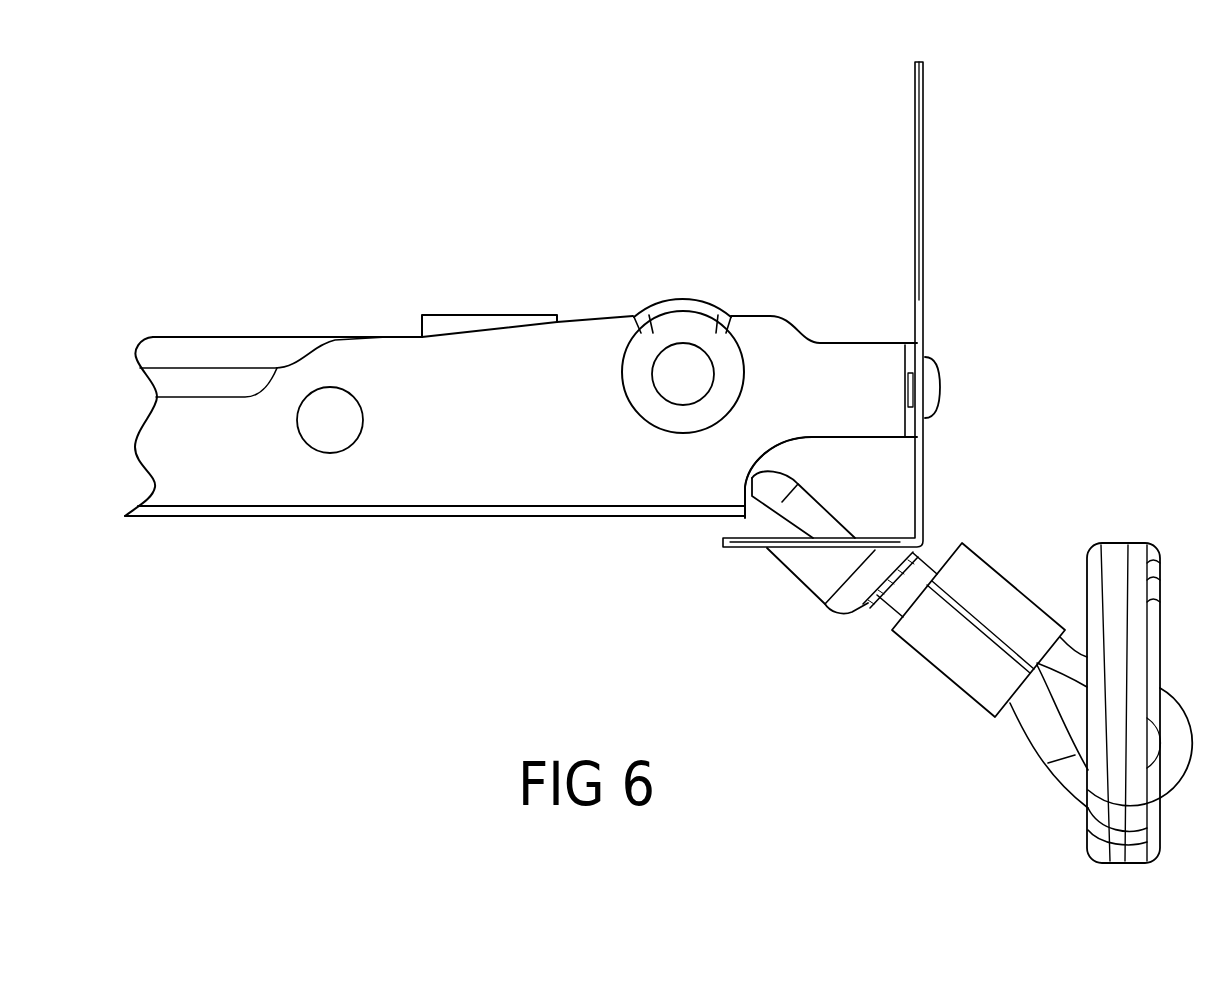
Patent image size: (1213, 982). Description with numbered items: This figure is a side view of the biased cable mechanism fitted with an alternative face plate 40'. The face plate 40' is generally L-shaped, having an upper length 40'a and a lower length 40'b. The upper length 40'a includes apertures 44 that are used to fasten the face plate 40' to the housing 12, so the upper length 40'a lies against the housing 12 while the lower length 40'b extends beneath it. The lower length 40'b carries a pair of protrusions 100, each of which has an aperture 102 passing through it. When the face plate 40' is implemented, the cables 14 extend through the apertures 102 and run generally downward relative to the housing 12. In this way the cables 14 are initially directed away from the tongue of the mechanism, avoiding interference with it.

The housing 12 is at (350, 540).
The cables 14 is at (817, 505).
The face plate 40' is at (901, 303).
The upper length 40'a is at (987, 181).
The lower length 40'b is at (743, 568).
The apertures 44 is at (925, 362).
The protrusions 100 is at (812, 577).
The aperture 102 is at (870, 607).